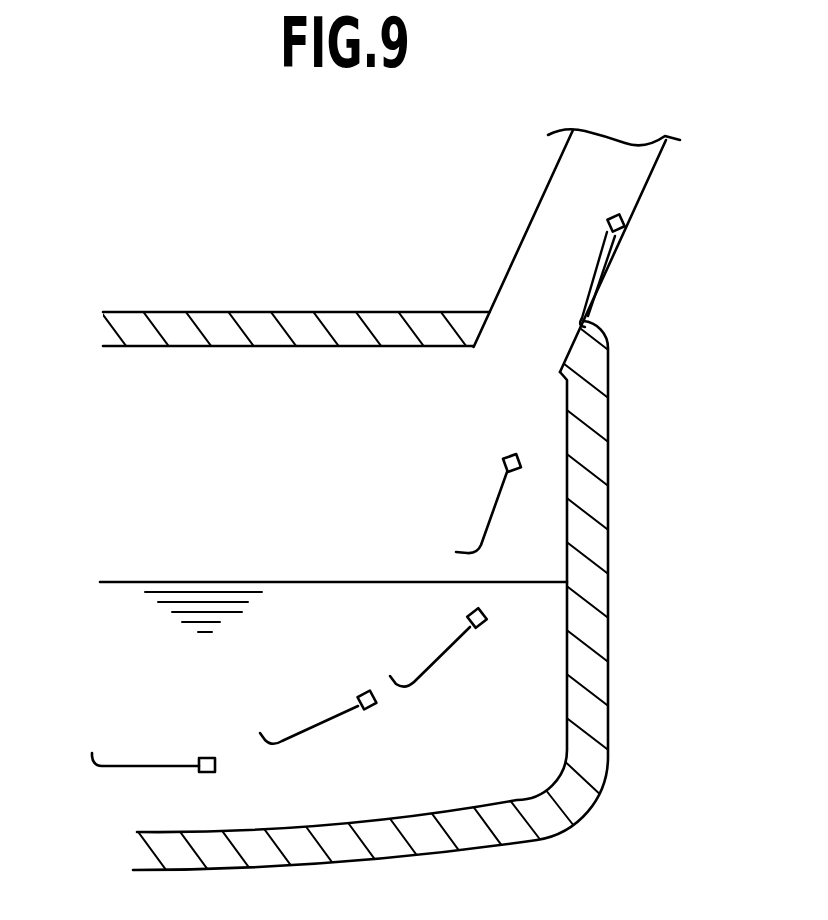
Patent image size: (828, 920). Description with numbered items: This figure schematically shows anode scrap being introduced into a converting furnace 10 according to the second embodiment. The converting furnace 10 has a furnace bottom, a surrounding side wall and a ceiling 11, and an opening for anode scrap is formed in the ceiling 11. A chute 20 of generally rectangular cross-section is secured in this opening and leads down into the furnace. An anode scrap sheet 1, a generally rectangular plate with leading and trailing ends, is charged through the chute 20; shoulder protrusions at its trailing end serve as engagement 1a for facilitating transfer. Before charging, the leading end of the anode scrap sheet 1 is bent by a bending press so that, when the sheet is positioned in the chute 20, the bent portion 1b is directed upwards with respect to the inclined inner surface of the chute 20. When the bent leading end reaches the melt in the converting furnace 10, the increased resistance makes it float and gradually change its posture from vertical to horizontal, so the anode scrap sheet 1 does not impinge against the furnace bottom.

The anode scrap sheet 1 is at (596, 266).
The engagement 1a is at (609, 218).
The bent portion 1b is at (586, 297).
The converting furnace 10 is at (600, 472).
The ceiling 11 is at (312, 327).
The chute 20 is at (530, 222).